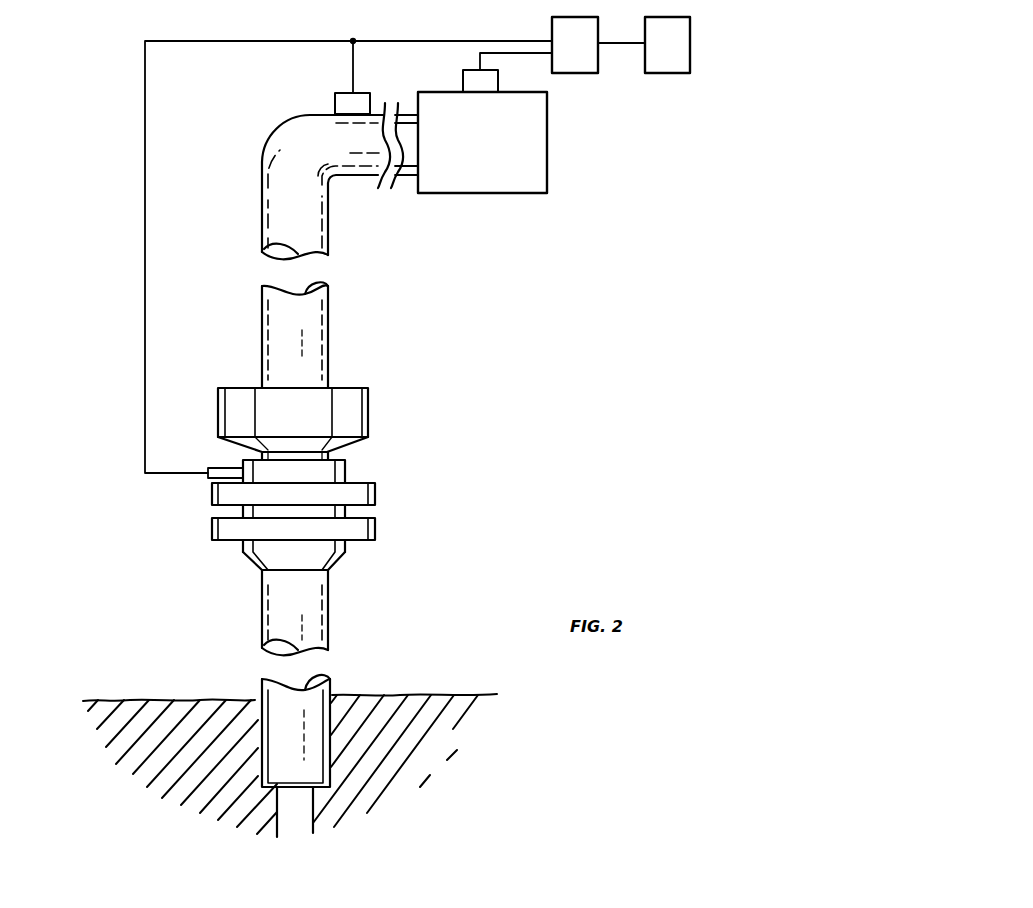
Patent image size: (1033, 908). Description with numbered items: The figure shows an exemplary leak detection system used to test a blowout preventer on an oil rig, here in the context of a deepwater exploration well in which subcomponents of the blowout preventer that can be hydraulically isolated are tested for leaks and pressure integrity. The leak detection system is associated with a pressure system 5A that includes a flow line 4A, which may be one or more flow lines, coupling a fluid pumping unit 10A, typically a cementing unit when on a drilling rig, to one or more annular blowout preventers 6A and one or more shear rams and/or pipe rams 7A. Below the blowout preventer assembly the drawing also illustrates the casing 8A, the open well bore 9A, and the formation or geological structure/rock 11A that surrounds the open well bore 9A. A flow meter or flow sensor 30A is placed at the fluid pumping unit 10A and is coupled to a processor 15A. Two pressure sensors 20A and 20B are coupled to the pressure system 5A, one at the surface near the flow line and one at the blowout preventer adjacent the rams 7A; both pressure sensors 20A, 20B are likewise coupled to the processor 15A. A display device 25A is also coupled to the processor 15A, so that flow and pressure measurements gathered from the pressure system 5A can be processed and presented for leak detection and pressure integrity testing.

The flow line 4A is at (329, 341).
The pressure system 5A is at (496, 428).
The annular blowout preventer 6A is at (369, 401).
The shear rams and/or pipe rams 7A is at (346, 509).
The casing 8A is at (329, 601).
The open well bore 9A is at (302, 830).
The fluid pumping unit 10A is at (468, 154).
The formation or geological structure/rock 11A is at (453, 729).
The processor 15A is at (561, 56).
The pressure sensor 20A is at (334, 108).
The pressure sensor 20B is at (210, 480).
The display device 25A is at (653, 56).
The flow meter or flow sensor 30A is at (462, 82).